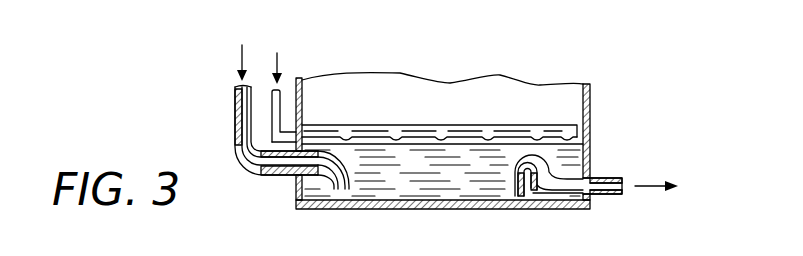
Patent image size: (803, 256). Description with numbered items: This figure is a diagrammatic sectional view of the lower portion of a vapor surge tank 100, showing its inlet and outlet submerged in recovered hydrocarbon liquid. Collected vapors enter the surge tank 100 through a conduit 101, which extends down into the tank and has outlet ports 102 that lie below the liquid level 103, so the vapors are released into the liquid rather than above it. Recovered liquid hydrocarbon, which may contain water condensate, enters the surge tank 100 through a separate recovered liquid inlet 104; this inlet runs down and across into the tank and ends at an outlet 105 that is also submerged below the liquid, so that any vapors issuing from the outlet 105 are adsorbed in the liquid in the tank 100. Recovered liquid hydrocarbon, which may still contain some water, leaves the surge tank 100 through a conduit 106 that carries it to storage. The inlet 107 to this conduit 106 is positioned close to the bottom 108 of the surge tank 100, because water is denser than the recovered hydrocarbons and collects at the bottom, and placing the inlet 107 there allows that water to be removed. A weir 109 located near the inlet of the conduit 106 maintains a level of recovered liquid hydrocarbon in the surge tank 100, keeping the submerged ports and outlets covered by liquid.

The surge tank 100 is at (590, 91).
The conduit 101 is at (281, 104).
The outlet ports 102 is at (396, 137).
The liquid level 103 is at (462, 125).
The recovered liquid inlet 104 is at (234, 107).
The outlet 105 is at (337, 190).
The conduit 106 is at (607, 176).
The inlet 107 is at (521, 199).
The bottom 108 is at (482, 209).
The weir 109 is at (537, 167).